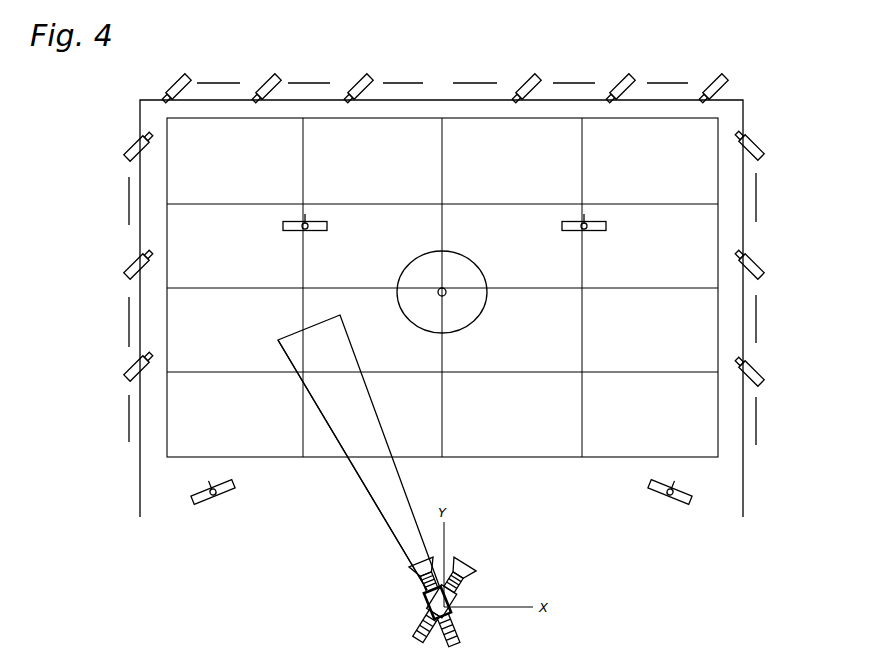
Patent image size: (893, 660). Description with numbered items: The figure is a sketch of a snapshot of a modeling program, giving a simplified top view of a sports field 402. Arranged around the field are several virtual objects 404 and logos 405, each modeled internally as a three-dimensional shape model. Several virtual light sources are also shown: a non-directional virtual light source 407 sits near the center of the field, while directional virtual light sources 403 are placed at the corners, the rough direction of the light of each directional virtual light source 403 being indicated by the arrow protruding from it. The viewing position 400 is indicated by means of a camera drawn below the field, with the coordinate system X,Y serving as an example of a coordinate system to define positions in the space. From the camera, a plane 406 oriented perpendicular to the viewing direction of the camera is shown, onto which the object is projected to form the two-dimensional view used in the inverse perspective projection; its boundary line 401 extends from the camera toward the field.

The viewing position 400 is at (430, 598).
The field of view boundary 401 is at (365, 483).
The sports field 402 is at (167, 420).
The directional virtual light source 403 is at (300, 224).
The virtual object 404 is at (130, 262).
The logo 405 is at (130, 330).
The plane 406 is at (320, 318).
The non-directional virtual light source 407 is at (450, 292).